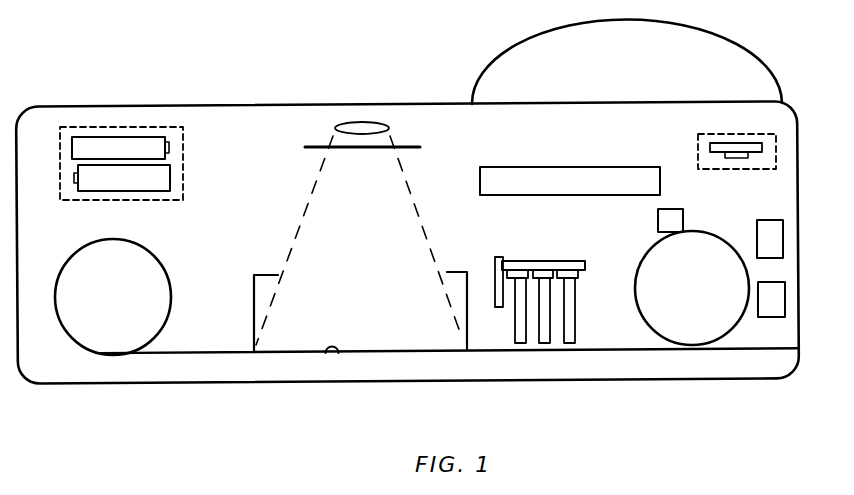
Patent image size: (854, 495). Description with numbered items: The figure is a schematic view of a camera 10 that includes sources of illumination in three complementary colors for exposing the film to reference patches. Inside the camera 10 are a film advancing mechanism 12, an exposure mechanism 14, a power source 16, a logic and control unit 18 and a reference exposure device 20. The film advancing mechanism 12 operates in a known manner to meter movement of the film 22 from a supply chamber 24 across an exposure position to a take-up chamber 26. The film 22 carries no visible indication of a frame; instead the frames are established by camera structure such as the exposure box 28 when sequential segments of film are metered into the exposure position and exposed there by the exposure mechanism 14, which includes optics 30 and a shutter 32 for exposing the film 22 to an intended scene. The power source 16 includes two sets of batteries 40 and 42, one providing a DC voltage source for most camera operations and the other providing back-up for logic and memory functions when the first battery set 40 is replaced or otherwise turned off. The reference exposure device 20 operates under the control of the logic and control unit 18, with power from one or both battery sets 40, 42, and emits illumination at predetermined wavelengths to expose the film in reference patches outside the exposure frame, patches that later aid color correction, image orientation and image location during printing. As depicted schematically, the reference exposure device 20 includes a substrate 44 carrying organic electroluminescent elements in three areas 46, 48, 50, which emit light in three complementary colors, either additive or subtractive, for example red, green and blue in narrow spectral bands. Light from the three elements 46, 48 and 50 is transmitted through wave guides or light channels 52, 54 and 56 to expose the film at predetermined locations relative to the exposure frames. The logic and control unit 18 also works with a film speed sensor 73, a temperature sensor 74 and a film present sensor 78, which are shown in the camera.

The camera 10 is at (252, 80).
The film advancing mechanism 12 is at (175, 364).
The exposure mechanism 14 is at (303, 170).
The power source 16 is at (48, 134).
The logic and control unit 18 is at (622, 162).
The reference exposure device 20 is at (559, 279).
The film 22 is at (336, 357).
The supply chamber 24 is at (736, 326).
The take-up chamber 26 is at (73, 341).
The exposure box 28 is at (253, 318).
The optics 30 is at (364, 125).
The shutter 32 is at (405, 146).
The first battery set 40 is at (146, 178).
The second battery set 42 is at (755, 152).
The substrate 44 is at (586, 266).
The first organic electroluminescent element 46 is at (518, 270).
The second organic electroluminescent element 48 is at (543, 270).
The third organic electroluminescent element 50 is at (568, 270).
The first light channel 52 is at (520, 318).
The second light channel 54 is at (546, 308).
The third light channel 56 is at (574, 328).
The film speed sensor 73 is at (670, 208).
The temperature sensor 74 is at (781, 240).
The film present sensor 78 is at (783, 299).